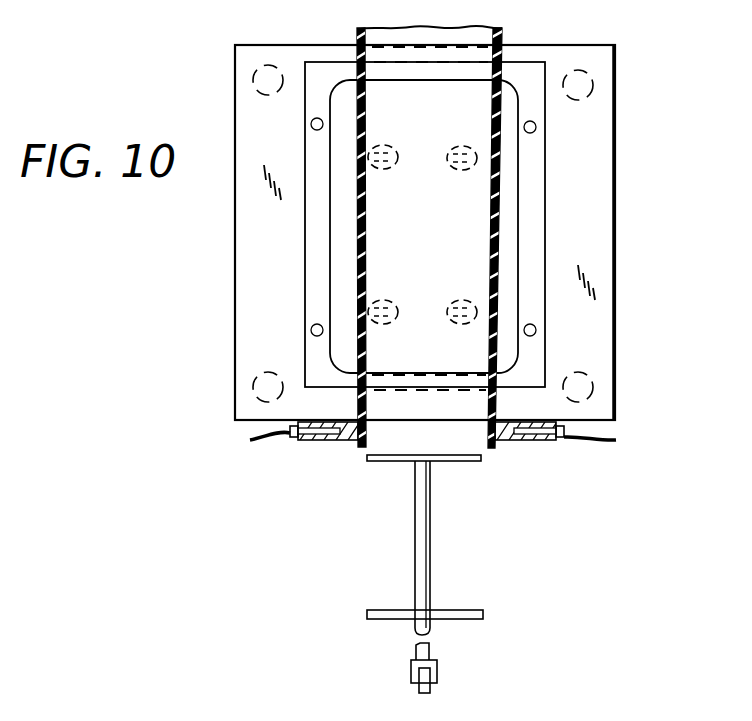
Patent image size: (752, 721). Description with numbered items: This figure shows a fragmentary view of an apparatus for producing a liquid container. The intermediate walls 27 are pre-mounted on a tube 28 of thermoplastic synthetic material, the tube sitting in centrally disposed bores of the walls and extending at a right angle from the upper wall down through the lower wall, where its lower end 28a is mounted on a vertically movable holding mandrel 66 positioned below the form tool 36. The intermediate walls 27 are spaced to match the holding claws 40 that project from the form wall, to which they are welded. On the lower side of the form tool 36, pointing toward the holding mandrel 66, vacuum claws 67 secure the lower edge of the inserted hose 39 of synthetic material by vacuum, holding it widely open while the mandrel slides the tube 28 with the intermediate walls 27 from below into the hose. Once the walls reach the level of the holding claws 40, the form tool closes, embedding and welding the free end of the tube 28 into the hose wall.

The form tool 36 is at (533, 184).
The hose of synthetic material 39 is at (503, 40).
The holding claws 40 is at (460, 171).
The vacuum claws 67 is at (336, 441).
The intermediate walls 27 is at (463, 461).
The tube 28 is at (422, 528).
The shaft end 28a is at (405, 663).
The holding mandrel 66 is at (428, 676).